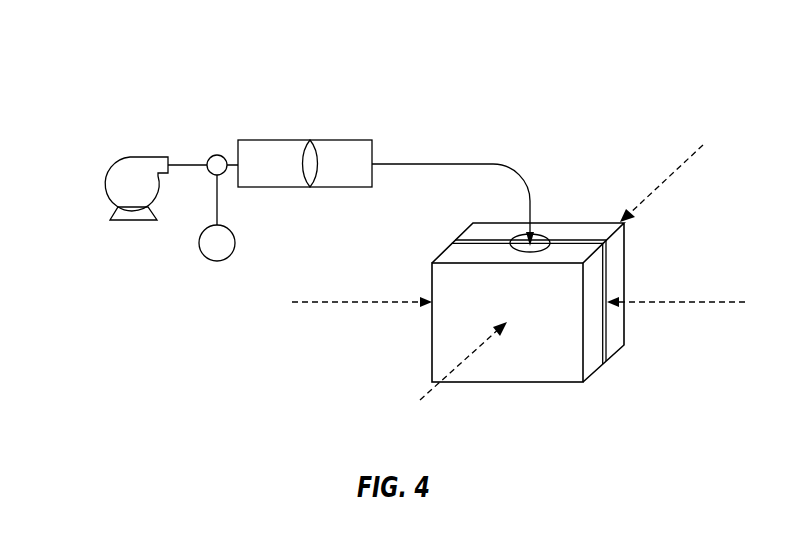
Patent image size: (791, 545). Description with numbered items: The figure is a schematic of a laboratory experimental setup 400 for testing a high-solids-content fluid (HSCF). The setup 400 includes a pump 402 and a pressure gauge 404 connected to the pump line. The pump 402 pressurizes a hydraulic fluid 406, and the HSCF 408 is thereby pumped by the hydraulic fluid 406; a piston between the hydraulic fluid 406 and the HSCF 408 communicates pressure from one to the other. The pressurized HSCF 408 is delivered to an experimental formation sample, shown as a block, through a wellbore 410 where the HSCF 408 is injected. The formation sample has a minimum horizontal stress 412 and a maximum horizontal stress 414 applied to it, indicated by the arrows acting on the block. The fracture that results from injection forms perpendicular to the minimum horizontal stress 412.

The laboratory experimental setup 400 is at (119, 68).
The pump 402 is at (130, 155).
The pressure gauge 404 is at (199, 243).
The hydraulic fluid 406 is at (273, 140).
The HSCF 408 is at (340, 140).
The wellbore 410 is at (540, 250).
The minimum horizontal stress 412 is at (463, 362).
The maximum horizontal stress 414 is at (697, 302).